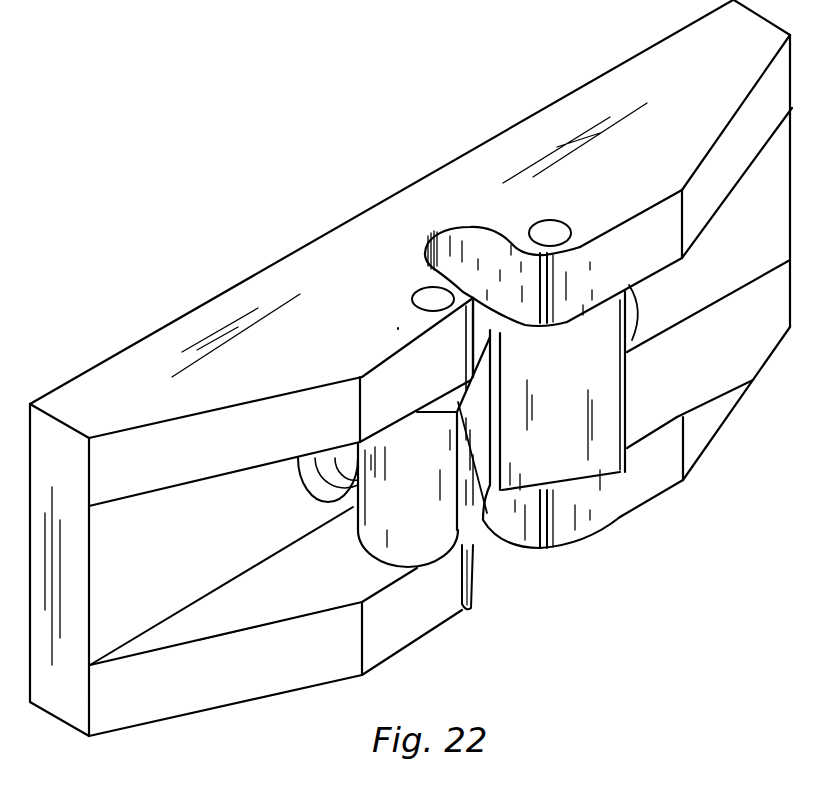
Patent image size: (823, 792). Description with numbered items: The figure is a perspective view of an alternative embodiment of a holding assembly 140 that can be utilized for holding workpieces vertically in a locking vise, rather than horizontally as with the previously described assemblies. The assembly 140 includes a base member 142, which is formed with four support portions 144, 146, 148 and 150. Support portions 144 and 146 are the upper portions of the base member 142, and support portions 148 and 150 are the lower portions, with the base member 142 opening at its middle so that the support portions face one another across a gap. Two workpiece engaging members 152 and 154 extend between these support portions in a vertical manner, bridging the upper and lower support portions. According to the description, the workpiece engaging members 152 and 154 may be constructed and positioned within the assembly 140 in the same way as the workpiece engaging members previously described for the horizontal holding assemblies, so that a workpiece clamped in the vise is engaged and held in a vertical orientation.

The assembly 140 is at (176, 291).
The base member 142 is at (573, 89).
The support portion 144 is at (662, 249).
The support portion 146 is at (399, 328).
The support portion 148 is at (662, 480).
The support portion 150 is at (430, 605).
The workpiece engaging member 152 is at (445, 530).
The workpiece engaging member 154 is at (616, 452).